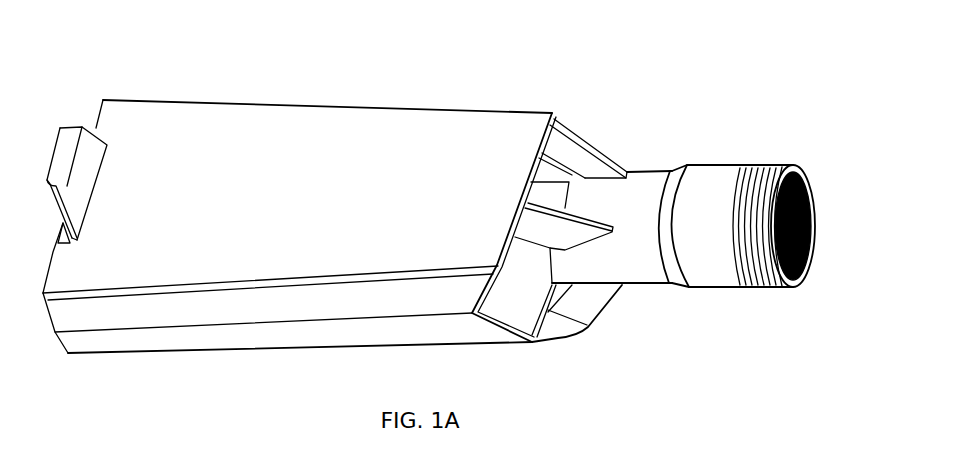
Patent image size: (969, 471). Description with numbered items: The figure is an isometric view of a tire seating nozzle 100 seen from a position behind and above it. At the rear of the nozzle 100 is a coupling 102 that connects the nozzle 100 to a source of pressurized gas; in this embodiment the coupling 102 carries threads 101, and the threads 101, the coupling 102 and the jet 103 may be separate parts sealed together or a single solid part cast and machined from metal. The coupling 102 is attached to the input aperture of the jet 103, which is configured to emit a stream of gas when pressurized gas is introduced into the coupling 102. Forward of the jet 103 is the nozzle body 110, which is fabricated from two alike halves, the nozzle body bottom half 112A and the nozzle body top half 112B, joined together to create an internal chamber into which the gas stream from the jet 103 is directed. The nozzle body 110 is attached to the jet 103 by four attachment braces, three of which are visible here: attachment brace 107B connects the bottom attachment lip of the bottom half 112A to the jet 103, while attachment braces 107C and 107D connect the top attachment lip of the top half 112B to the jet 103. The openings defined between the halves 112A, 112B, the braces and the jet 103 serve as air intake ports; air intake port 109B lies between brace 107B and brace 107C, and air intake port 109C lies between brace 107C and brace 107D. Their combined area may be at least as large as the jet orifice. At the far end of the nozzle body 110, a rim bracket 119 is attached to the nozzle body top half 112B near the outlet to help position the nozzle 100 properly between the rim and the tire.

The nozzle 100 is at (628, 85).
The threads 101 is at (777, 285).
The coupling 102 is at (722, 190).
The jet 103 is at (635, 200).
The attachment brace 107B is at (598, 303).
The attachment brace 107C is at (560, 232).
The attachment brace 107D is at (570, 150).
The air intake port 109B is at (531, 312).
The air intake port 109C is at (588, 172).
The nozzle body 110 is at (207, 360).
The nozzle body bottom half 112A is at (253, 335).
The nozzle body top half 112B is at (370, 125).
The rim bracket 119 is at (77, 127).